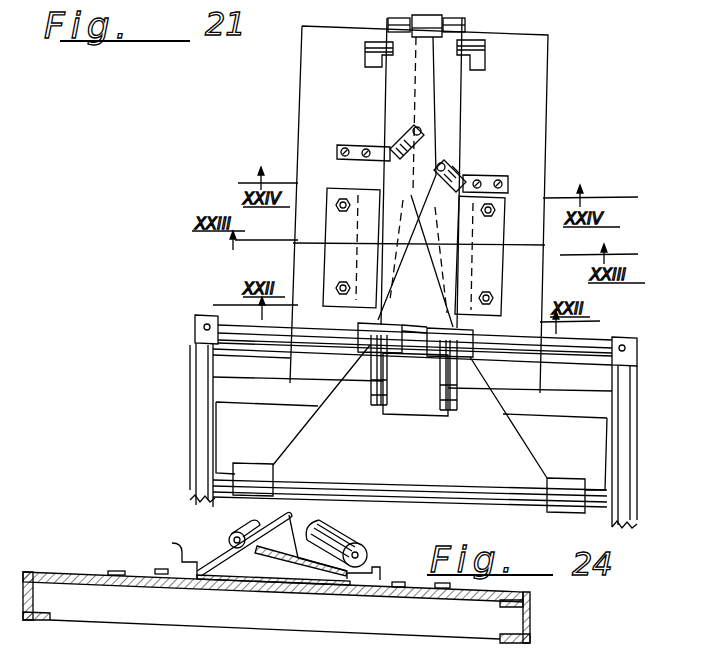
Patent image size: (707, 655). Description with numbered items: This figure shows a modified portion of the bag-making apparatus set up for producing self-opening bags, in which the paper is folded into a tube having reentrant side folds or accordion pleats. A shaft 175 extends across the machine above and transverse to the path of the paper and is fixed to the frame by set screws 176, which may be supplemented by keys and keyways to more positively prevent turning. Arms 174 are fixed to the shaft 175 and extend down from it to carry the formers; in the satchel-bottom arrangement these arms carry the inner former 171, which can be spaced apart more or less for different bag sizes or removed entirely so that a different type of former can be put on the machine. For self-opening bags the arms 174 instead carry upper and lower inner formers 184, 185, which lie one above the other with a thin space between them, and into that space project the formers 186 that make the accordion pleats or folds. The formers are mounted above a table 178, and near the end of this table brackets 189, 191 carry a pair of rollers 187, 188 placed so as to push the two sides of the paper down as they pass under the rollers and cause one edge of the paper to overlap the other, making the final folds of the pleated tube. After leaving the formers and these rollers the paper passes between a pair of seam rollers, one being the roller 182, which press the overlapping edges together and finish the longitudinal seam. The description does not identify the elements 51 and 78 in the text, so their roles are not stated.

In FIG. 21, the frame post 51 is at (200, 447).
In FIG. 21, the lower shaft 78 is at (558, 490).
In FIG. 21, the inner former 171 is at (228, 289).
In FIG. 21, the arms 174 is at (370, 378).
In FIG. 21, the shaft 175 is at (598, 342).
In FIG. 21, the set screws 176 is at (200, 324).
In FIG. 21, the table 178 is at (533, 118).
In FIG. 24, the table 178 is at (152, 578).
In FIG. 21, the roller 182 is at (432, 40).
In FIG. 21, the upper inner former 184 is at (417, 278).
In FIG. 21, the lower inner former 185 is at (413, 392).
In FIG. 21, the formers 186 is at (370, 250).
In FIG. 21, the roller 187 is at (457, 176).
In FIG. 24, the roller 187 is at (327, 545).
In FIG. 21, the roller 188 is at (405, 142).
In FIG. 24, the roller 188 is at (248, 531).
In FIG. 21, the bracket 189 is at (500, 180).
In FIG. 24, the bracket 189 is at (382, 570).
In FIG. 21, the bracket 191 is at (362, 145).
In FIG. 24, the bracket 191 is at (242, 551).